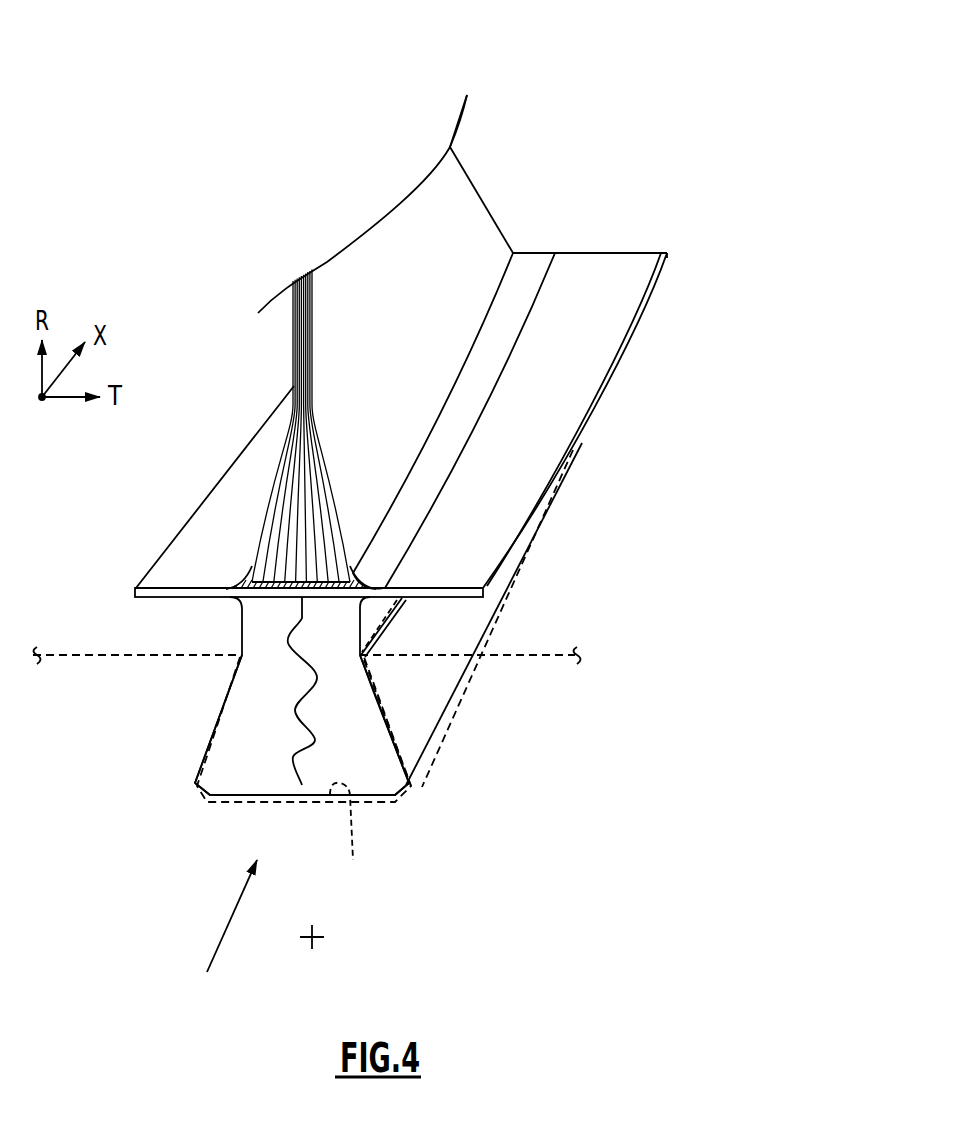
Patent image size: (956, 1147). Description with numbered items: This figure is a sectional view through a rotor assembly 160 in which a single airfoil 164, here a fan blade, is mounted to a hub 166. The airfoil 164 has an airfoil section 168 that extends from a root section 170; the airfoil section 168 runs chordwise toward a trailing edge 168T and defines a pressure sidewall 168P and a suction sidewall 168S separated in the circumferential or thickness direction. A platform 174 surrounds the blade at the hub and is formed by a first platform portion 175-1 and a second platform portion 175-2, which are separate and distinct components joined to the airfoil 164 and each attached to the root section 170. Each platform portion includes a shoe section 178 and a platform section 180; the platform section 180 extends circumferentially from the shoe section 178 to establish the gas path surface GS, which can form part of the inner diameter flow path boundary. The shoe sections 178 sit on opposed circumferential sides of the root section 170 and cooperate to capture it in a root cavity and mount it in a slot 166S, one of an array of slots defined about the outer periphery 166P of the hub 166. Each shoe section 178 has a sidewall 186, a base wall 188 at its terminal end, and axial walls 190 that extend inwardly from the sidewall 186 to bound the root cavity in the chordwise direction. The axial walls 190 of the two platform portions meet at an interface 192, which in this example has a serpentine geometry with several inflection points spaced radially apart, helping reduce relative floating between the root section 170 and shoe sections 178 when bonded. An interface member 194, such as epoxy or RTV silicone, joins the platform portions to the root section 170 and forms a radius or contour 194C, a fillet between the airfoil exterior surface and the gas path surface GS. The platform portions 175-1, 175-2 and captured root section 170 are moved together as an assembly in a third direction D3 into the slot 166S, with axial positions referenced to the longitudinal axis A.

The rotor assembly 160 is at (127, 78).
The airfoil 164 is at (320, 262).
The airfoil section 168 is at (487, 200).
The trailing edge 168T is at (470, 168).
The pressure sidewall 168P is at (483, 235).
The suction sidewall 168S is at (300, 333).
The gas path surface GS is at (578, 266).
The platform 174 is at (645, 247).
The first platform portion 175-1 is at (167, 550).
The second platform portion 175-2 is at (607, 411).
The platform section 180 is at (221, 484).
The interface member 194 is at (247, 567).
The radius or contour 194C is at (458, 418).
The root section 170 is at (453, 620).
The sidewall 186 is at (457, 643).
The hub 166 is at (543, 657).
The outer periphery 166P is at (387, 723).
The slot 166S is at (354, 862).
The axial wall 190 is at (247, 712).
The shoe section 178 is at (235, 757).
The base wall 188 is at (235, 795).
The interface 192 is at (288, 783).
The third direction D3 is at (225, 928).
The longitudinal axis A is at (317, 933).